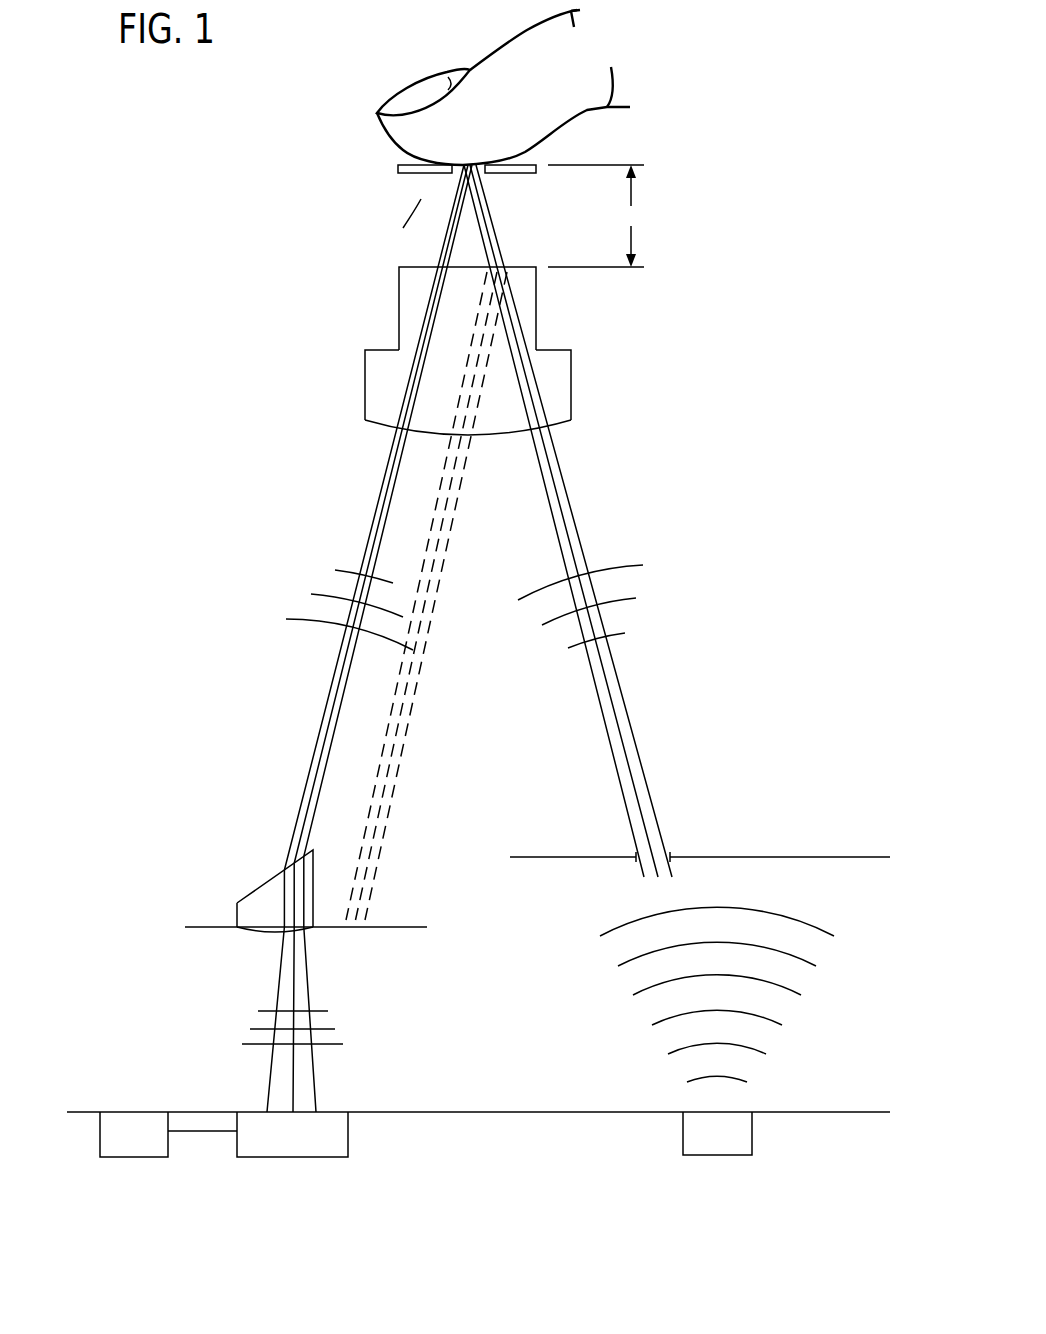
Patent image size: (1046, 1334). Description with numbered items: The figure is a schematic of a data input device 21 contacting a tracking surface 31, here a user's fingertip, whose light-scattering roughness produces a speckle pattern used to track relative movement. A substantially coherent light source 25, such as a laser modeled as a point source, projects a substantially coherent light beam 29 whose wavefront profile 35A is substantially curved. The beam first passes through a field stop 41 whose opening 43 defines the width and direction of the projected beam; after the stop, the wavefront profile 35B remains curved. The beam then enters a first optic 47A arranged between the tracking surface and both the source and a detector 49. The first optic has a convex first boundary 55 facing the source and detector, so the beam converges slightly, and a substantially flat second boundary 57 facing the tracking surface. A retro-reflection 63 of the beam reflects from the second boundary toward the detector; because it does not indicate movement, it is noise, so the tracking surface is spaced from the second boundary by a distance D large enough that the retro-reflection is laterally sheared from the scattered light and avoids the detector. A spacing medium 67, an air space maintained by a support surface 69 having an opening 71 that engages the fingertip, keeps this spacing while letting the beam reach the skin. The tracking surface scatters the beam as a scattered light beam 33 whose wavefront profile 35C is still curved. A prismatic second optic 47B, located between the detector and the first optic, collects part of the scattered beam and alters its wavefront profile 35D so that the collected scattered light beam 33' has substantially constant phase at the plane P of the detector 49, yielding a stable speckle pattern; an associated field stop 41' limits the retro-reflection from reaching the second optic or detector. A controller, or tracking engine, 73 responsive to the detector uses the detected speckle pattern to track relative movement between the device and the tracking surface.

The data input device 21 is at (246, 270).
The substantially coherent light source 25 is at (683, 1148).
The substantially coherent light beam 29 is at (622, 700).
The tracking surface 31 is at (412, 155).
The scattered light beam 33 is at (361, 517).
The collected scattered light beam 33' is at (254, 1019).
The wavefront profile 35A is at (652, 990).
The wavefront profile 35B is at (625, 600).
The wavefront profile 35C is at (318, 598).
The wavefront profile 35D is at (255, 1027).
The field stop 41 is at (684, 837).
The field stop 41' is at (333, 950).
The opening 43 is at (648, 862).
The first optic 47A is at (365, 385).
The second optic 47B is at (237, 903).
The detector 49 is at (348, 1147).
The first boundary 55 is at (380, 430).
The second boundary 57 is at (400, 267).
The retro-reflection 63 is at (410, 712).
The spacing medium 67 is at (408, 210).
The support surface 69 is at (531, 164).
The opening 71 is at (487, 174).
The controller 73 is at (100, 1138).
The plane P is at (330, 1112).
The distance D is at (596, 216).